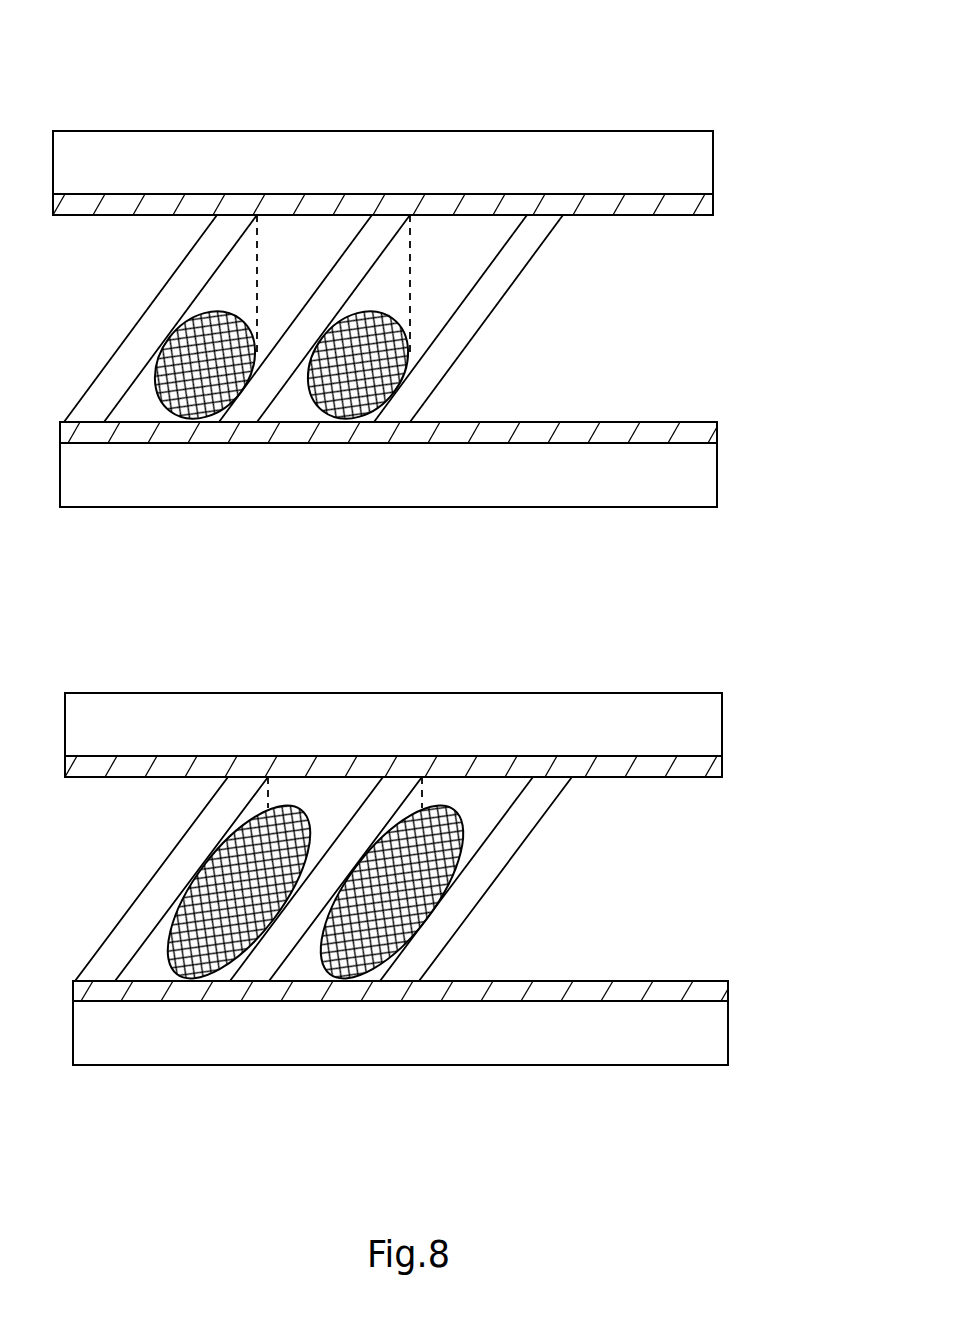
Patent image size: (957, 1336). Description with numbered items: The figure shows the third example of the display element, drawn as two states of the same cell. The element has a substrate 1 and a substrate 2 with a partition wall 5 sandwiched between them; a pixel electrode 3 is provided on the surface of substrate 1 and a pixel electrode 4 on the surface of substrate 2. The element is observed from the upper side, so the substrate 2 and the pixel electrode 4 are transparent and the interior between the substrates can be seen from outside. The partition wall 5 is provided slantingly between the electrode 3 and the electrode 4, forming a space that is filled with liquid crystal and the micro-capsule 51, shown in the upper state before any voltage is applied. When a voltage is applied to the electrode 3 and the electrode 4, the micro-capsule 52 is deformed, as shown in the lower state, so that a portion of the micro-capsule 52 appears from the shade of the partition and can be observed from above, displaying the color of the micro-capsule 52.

The substrate 1 is at (710, 482).
The substrate 2 is at (700, 152).
The pixel electrode 3 is at (717, 428).
The pixel electrode 4 is at (705, 203).
The partition wall 5 is at (555, 292).
The micro-capsule 51 is at (468, 290).
The micro-capsule 52 is at (370, 977).